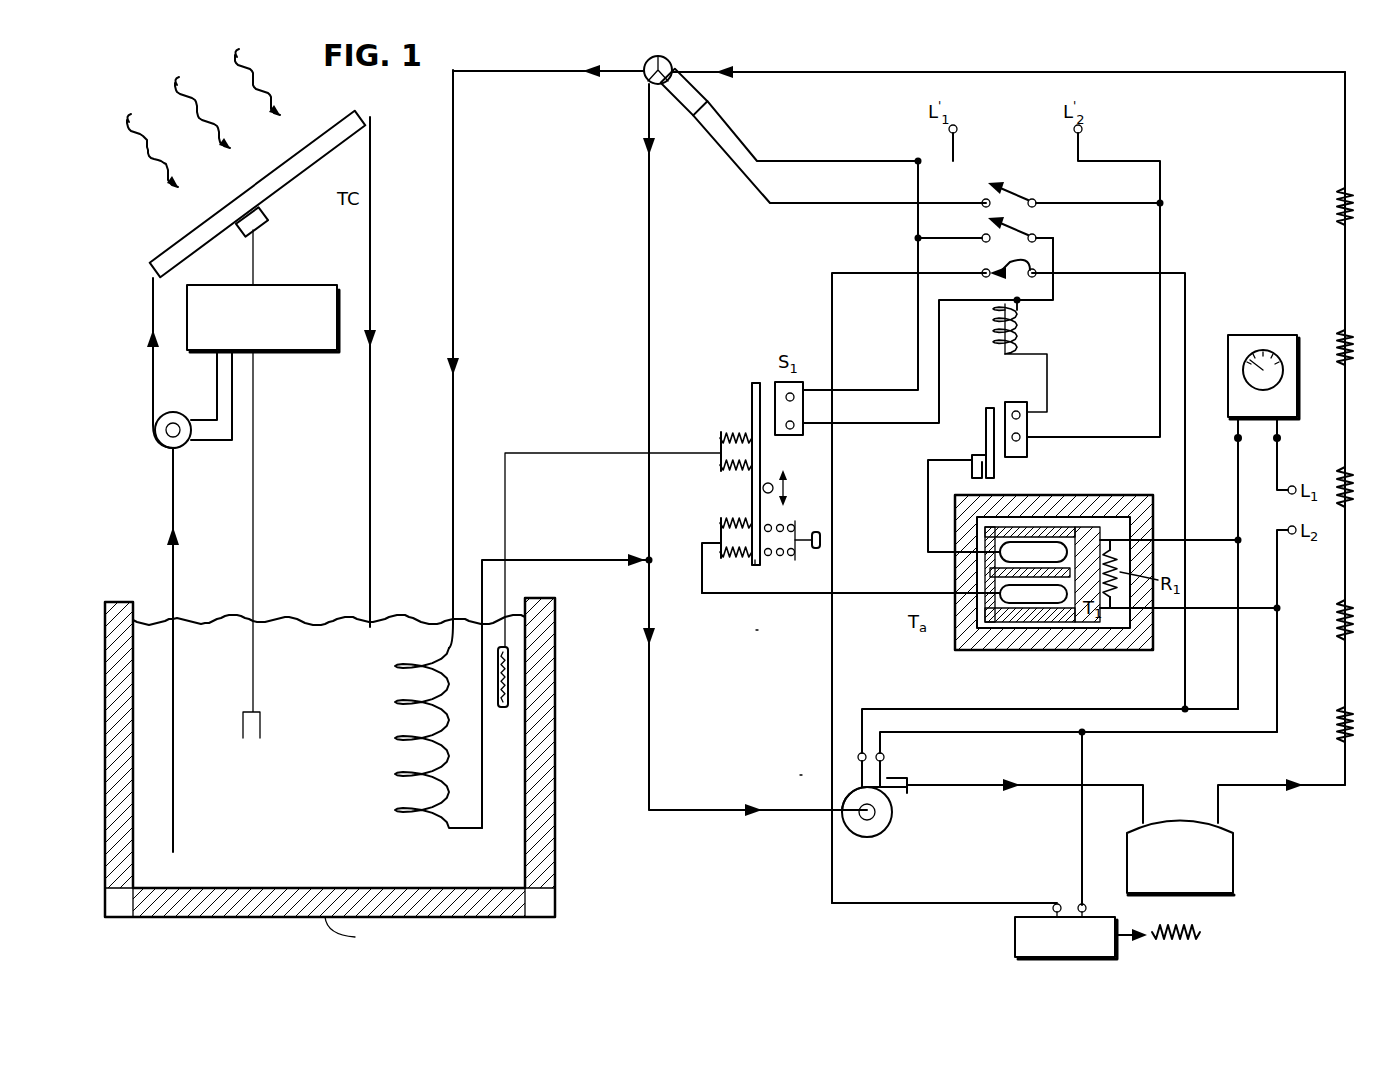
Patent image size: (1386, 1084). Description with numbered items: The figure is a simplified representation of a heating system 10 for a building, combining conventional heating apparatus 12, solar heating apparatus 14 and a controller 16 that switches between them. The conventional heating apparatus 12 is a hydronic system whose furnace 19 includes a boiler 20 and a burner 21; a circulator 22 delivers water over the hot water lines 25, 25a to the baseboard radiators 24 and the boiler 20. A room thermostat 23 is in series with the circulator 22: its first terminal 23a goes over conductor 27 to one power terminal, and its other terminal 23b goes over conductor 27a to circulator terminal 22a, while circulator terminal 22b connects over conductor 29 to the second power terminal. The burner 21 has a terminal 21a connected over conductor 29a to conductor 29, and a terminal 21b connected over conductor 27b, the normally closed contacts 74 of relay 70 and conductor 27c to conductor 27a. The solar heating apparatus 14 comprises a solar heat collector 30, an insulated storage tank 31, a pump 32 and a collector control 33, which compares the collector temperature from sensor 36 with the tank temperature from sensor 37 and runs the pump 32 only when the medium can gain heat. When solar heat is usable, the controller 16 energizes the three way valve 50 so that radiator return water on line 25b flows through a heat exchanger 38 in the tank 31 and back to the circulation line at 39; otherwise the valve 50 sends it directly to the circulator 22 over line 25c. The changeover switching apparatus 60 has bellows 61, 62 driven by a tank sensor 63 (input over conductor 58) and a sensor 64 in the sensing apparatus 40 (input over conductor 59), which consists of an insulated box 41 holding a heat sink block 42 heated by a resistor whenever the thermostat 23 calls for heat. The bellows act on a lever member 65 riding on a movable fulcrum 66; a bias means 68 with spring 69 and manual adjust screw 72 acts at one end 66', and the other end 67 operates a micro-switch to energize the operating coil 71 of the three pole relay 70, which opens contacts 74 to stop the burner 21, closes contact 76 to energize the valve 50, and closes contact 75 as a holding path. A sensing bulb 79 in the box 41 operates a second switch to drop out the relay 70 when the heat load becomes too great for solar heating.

The heating system 10 is at (709, 864).
The conventional heating apparatus 12 is at (798, 774).
The solar heating apparatus 14 is at (142, 531).
The controller 16 is at (755, 634).
The furnace 19 is at (1242, 889).
The boiler 20 is at (1233, 860).
The burner 21 is at (1012, 932).
The burner terminal 21a is at (1086, 904).
The burner terminal 21b is at (1055, 902).
The water circulator 22 is at (892, 812).
The circulator terminal 22a is at (860, 757).
The circulator terminal 22b is at (884, 757).
The thermostat 23 is at (1228, 392).
The thermostat terminal 23a is at (1282, 438).
The thermostat terminal 23b is at (1233, 440).
The baseboard radiators 24 is at (1340, 195).
The hot water lines 25 is at (968, 785).
The hot water line 25a is at (1240, 785).
The valve inlet line 25b is at (1088, 72).
The valve outlet line 25c is at (652, 305).
The conductor 27 is at (1276, 472).
The conductor 27a is at (1236, 497).
The conductor 27b is at (832, 905).
The conductor 27c is at (1182, 479).
The conductor 29 is at (1040, 742).
The conductor 29a is at (1075, 800).
The solar heat collector 30 is at (360, 110).
The insulated storage tank 31 is at (556, 885).
The pump 32 is at (183, 440).
The collector control 33 is at (318, 285).
The temperature sensor 36 is at (254, 236).
The sensor 37 is at (261, 712).
The heat exchanger 38 is at (390, 763).
The return to circulation line 39 is at (590, 560).
The sensing apparatus 40 is at (1072, 684).
The insulated box 41 is at (1040, 503).
The heat sink block 42 is at (1085, 540).
The three way valve 50 is at (648, 84).
The conductor 58 is at (605, 453).
The conductor 59 is at (880, 597).
The changeover switching apparatus 60 is at (855, 516).
The vapor-charged bellows 61 is at (721, 445).
The vapor-charged bellows 62 is at (718, 530).
The temperature sensor 63 is at (508, 680).
The temperature sensor 64 is at (1000, 595).
The lever member 65 is at (750, 405).
The movable fulcrum 66 is at (798, 478).
The lever end 66' is at (743, 595).
The lever end 67 is at (757, 383).
The bias means 68 is at (790, 560).
The spring 69 is at (795, 521).
The relay 70 is at (1102, 387).
The relay operating coil 71 is at (990, 339).
The manual adjust screw 72 is at (820, 545).
The normally closed contacts 74 is at (1031, 262).
The relay contact 75 is at (1020, 226).
The relay contact 76 is at (1020, 192).
The temperature sensing bulb 79 is at (1010, 552).